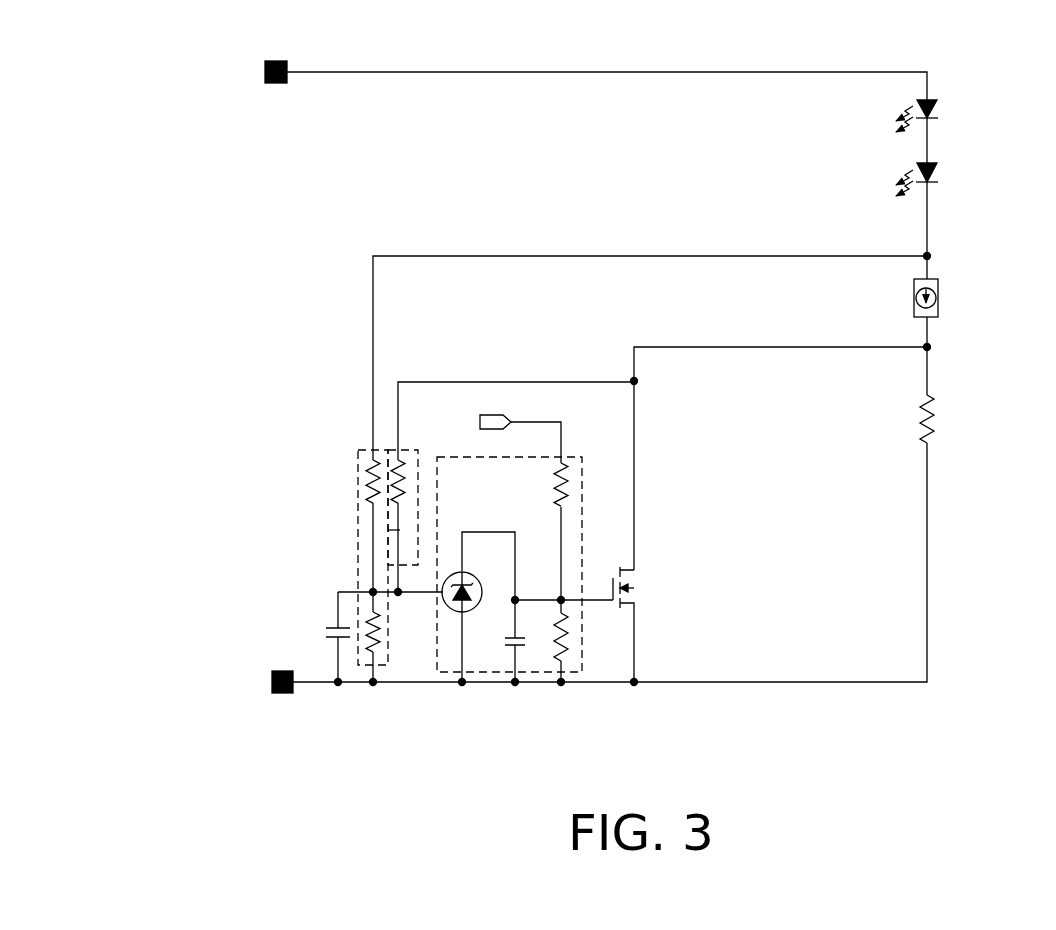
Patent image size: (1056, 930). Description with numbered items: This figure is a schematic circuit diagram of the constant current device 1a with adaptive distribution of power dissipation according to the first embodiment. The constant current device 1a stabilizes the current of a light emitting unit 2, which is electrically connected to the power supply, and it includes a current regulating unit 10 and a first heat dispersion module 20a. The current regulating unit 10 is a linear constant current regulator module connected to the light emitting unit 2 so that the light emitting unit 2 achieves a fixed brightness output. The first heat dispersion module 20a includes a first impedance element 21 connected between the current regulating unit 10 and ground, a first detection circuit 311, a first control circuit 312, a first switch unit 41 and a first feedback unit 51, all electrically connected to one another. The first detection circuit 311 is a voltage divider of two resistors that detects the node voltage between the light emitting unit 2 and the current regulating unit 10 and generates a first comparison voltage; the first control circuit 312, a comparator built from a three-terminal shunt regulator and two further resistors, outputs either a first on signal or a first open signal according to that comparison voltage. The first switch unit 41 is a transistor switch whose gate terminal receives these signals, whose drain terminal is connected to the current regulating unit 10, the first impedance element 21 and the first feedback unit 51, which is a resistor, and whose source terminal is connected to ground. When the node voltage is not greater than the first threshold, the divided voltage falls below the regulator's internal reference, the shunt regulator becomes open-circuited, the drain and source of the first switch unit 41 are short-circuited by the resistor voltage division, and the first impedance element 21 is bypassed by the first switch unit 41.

The constant current device 1a is at (72, 114).
The first heat dispersion module 20a is at (296, 287).
The light emitting unit 2 is at (947, 107).
The current regulating unit 10 is at (944, 301).
The first impedance element 21 is at (946, 395).
The first switch unit 41 is at (615, 568).
The first feedback unit 51 is at (410, 528).
The first detection circuit 311 is at (395, 667).
The first control circuit 312 is at (490, 674).